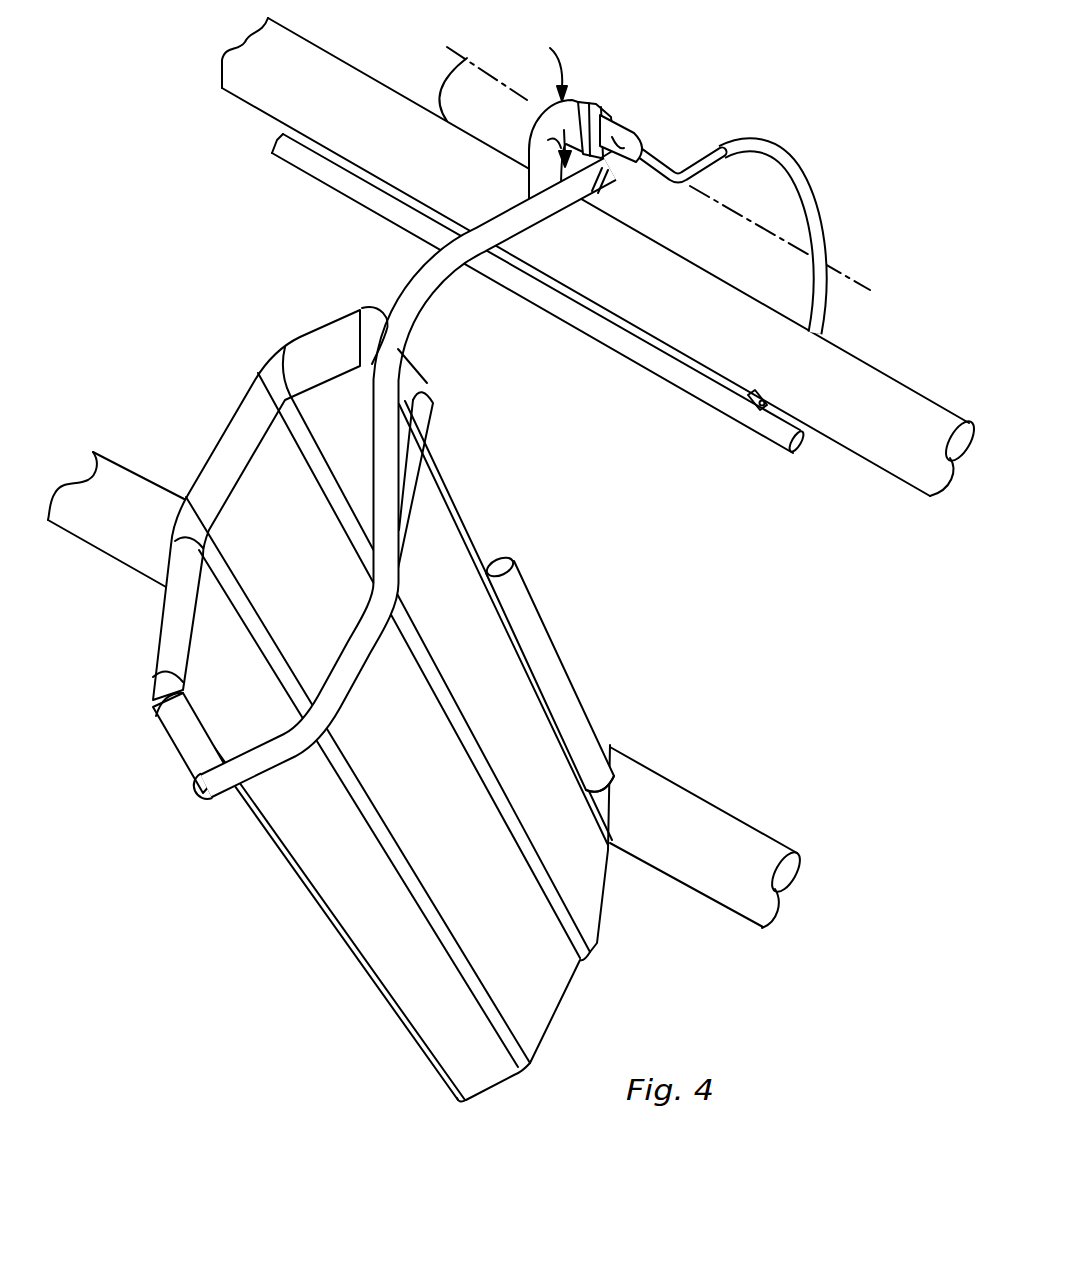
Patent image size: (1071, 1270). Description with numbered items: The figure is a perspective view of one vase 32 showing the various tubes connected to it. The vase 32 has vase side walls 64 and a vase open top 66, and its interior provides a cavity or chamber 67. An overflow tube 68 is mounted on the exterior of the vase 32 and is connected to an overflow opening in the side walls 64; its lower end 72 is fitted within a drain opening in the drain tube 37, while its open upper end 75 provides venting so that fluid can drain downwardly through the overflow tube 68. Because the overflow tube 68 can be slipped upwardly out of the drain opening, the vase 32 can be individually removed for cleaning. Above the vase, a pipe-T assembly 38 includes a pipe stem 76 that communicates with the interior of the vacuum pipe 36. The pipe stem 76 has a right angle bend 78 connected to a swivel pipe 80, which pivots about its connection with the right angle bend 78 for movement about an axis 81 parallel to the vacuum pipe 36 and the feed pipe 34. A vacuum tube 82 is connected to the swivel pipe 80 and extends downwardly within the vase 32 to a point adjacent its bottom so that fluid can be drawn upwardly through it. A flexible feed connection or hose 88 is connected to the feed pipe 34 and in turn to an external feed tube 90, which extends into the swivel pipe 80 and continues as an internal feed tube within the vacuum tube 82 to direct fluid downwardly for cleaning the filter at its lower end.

The vase 32 is at (390, 704).
The feed pipe 34 is at (617, 363).
The vacuum pipe 36 is at (883, 467).
The drain tube 37 is at (757, 837).
The pipe-T assembly 38 is at (548, 99).
The vase side walls 64 is at (321, 914).
The vase open top 66 is at (390, 704).
The cavity or chamber 67 is at (169, 717).
The overflow tube 68 is at (562, 663).
The lower end 72 is at (604, 762).
The open upper end 75 is at (492, 565).
The pipe stem 76 is at (530, 174).
The right angle bend 78 is at (578, 97).
The swivel pipe 80 is at (617, 182).
The axis 81 is at (437, 126).
The vacuum tube 82 is at (413, 278).
The flexible feed connection or hose 88 is at (819, 227).
The external feed tube 90 is at (690, 168).